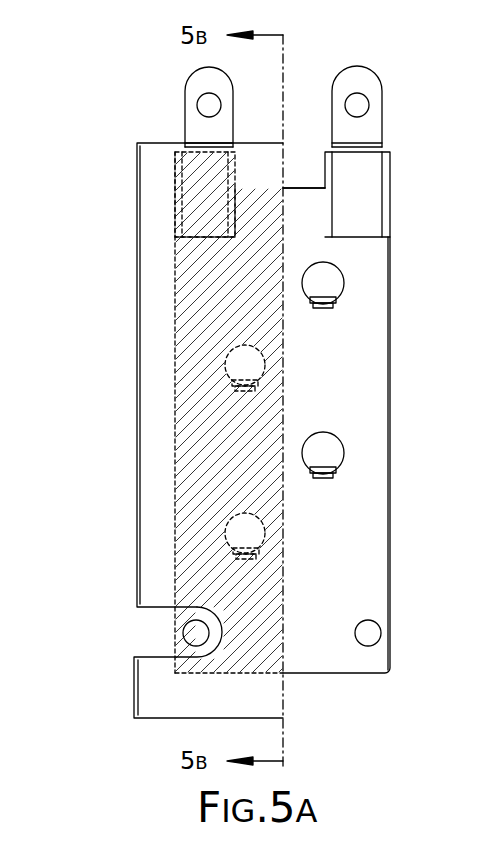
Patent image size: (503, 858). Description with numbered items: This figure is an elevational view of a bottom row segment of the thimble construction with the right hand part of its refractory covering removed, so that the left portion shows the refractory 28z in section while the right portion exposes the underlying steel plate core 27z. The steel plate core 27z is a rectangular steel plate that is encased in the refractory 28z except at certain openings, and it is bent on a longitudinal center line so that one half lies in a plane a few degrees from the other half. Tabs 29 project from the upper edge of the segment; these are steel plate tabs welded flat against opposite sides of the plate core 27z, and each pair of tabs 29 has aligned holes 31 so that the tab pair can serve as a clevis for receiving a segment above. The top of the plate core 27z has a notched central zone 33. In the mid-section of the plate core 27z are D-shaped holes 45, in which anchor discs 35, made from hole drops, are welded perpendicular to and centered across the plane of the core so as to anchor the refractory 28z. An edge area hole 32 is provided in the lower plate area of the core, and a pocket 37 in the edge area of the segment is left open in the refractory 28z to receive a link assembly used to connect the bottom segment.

The refractory 28z is at (157, 375).
The steel plate core 27z is at (352, 530).
The tab 29 is at (362, 73).
The hole 31 is at (362, 102).
The notched central zone 33 is at (306, 187).
The D-shaped hole 45 is at (346, 446).
The anchor disc 35 is at (322, 466).
The edge area hole 32 is at (366, 622).
The pocket 37 is at (158, 657).